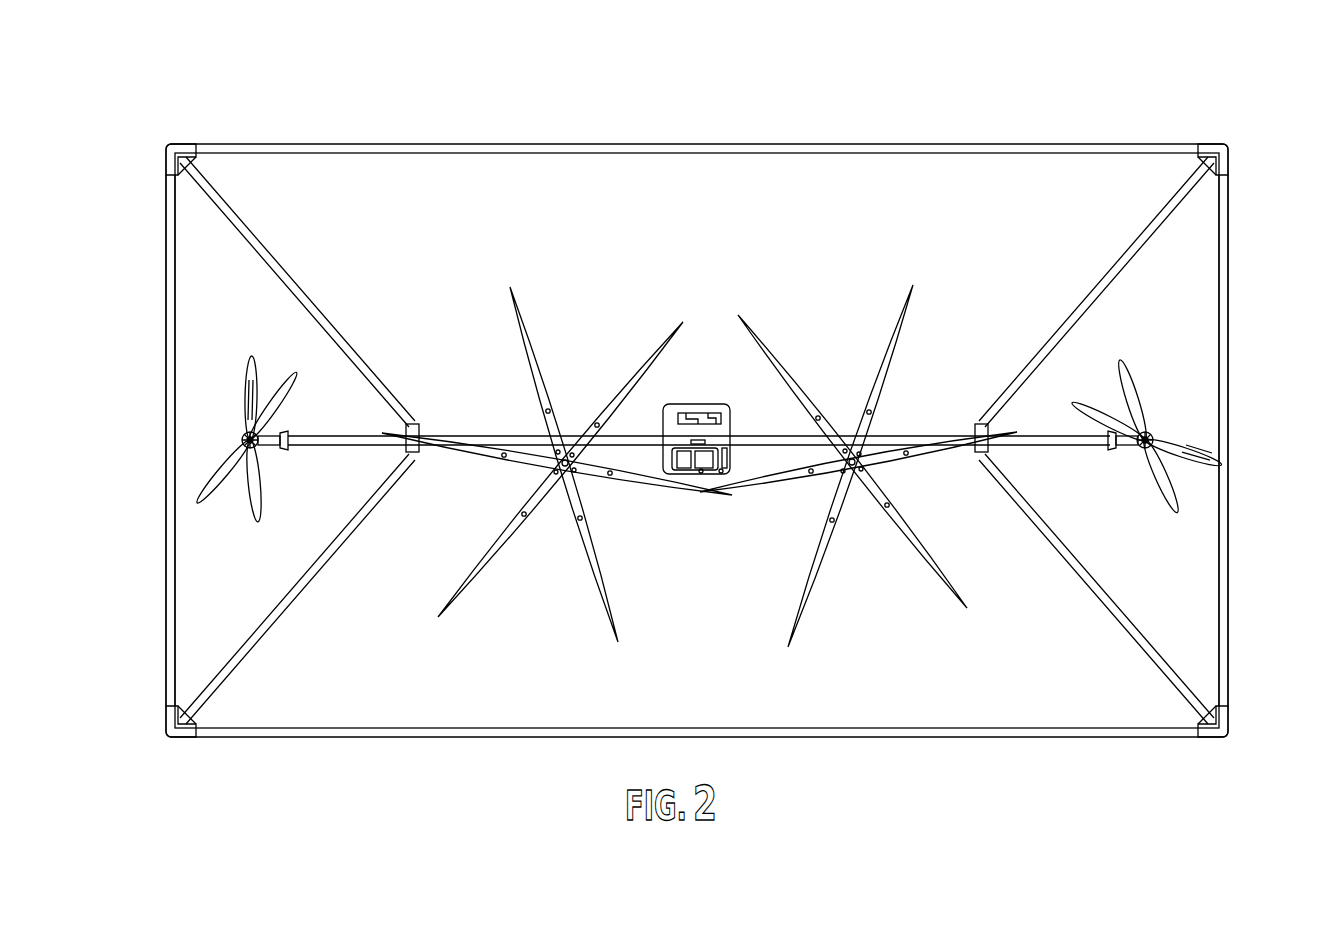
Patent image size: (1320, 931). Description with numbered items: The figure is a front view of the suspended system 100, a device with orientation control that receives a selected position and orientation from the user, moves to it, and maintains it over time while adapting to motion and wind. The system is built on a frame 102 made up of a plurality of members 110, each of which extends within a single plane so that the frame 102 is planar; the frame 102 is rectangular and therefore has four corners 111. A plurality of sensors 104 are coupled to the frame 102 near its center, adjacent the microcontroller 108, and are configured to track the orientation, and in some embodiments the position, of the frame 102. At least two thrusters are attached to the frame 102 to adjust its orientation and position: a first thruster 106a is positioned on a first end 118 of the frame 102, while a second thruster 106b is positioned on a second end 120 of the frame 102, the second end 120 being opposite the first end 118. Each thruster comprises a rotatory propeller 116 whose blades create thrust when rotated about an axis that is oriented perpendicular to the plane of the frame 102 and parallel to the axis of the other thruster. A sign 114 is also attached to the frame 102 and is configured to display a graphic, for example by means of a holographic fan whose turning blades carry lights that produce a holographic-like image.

The suspended system 100 is at (306, 88).
The frame 102 is at (717, 147).
The plurality of sensors 104 is at (685, 458).
The first thruster 106a is at (242, 430).
The second thruster 106b is at (1150, 432).
The microcontroller 108 is at (698, 432).
The members 110 is at (325, 437).
The corners 111 is at (167, 157).
The sign 114 is at (790, 620).
The rotatory propeller 116 is at (213, 483).
The first end 118 is at (167, 408).
The second end 120 is at (1226, 272).